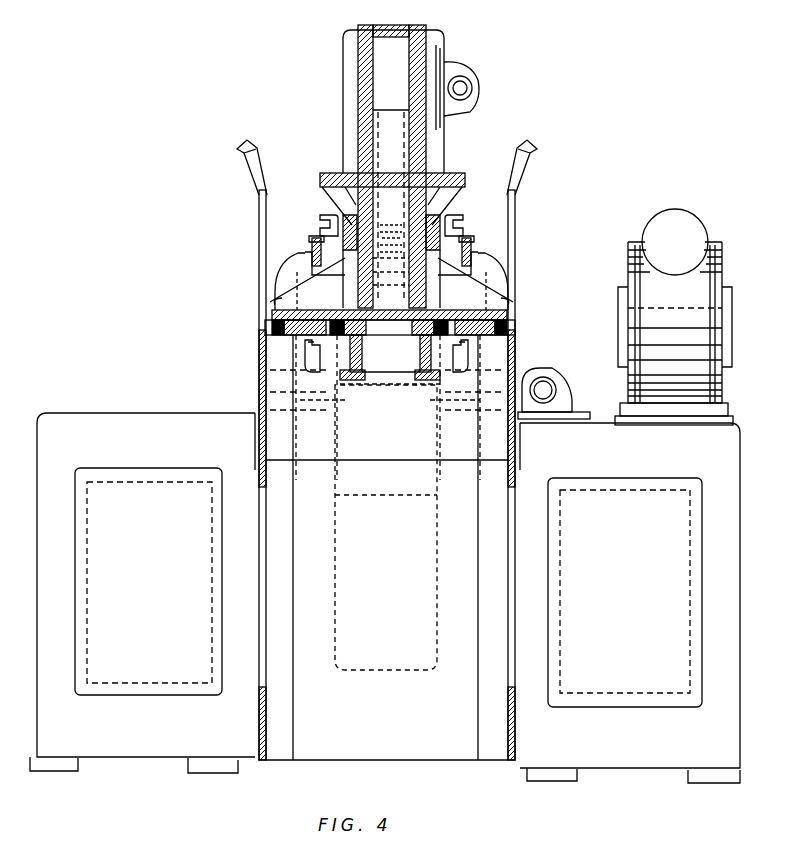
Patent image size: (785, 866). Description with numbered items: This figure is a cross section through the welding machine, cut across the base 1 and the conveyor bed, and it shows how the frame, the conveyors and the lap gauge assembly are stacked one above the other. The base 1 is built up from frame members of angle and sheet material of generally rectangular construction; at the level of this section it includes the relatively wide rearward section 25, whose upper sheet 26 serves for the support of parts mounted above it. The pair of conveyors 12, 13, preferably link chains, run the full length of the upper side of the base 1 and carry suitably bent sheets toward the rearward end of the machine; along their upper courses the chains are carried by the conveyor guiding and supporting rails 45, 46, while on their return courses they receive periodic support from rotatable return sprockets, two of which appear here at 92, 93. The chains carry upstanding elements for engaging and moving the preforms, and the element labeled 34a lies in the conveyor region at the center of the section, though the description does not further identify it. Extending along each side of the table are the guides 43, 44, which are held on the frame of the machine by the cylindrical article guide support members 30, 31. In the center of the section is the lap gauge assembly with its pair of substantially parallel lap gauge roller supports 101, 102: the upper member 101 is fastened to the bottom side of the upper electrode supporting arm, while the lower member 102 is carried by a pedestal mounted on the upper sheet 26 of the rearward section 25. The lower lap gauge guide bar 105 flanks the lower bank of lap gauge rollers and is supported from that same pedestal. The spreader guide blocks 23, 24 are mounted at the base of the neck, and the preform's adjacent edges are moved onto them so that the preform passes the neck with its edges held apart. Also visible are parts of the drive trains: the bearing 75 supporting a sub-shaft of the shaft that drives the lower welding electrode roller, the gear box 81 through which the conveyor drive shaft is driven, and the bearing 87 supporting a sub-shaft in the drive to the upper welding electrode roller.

The base 1 is at (527, 353).
The conveyor 12 is at (471, 248).
The conveyor 13 is at (312, 240).
The spreader guide block 23 is at (345, 215).
The spreader guide block 24 is at (440, 228).
The rearward section 25 is at (205, 432).
The upper sheet 26 is at (120, 412).
The cylindrical article guide support member 30 is at (258, 271).
The cylindrical article guide support member 31 is at (523, 276).
The inner sleeve 34a is at (452, 352).
The guide 43 is at (240, 165).
The guide 44 is at (545, 168).
The conveyor guiding and supporting rail 45 is at (310, 252).
The conveyor guiding and supporting rail 46 is at (472, 256).
The bearing 75 is at (556, 383).
The gear box 81 is at (690, 222).
The bearing 87 is at (457, 72).
The return sprocket 92 is at (320, 405).
The return sprocket 93 is at (460, 405).
The lap gauge roller support 101 is at (395, 205).
The lap gauge roller support 102 is at (392, 270).
The lower lap gauge guide bar 105 is at (312, 266).